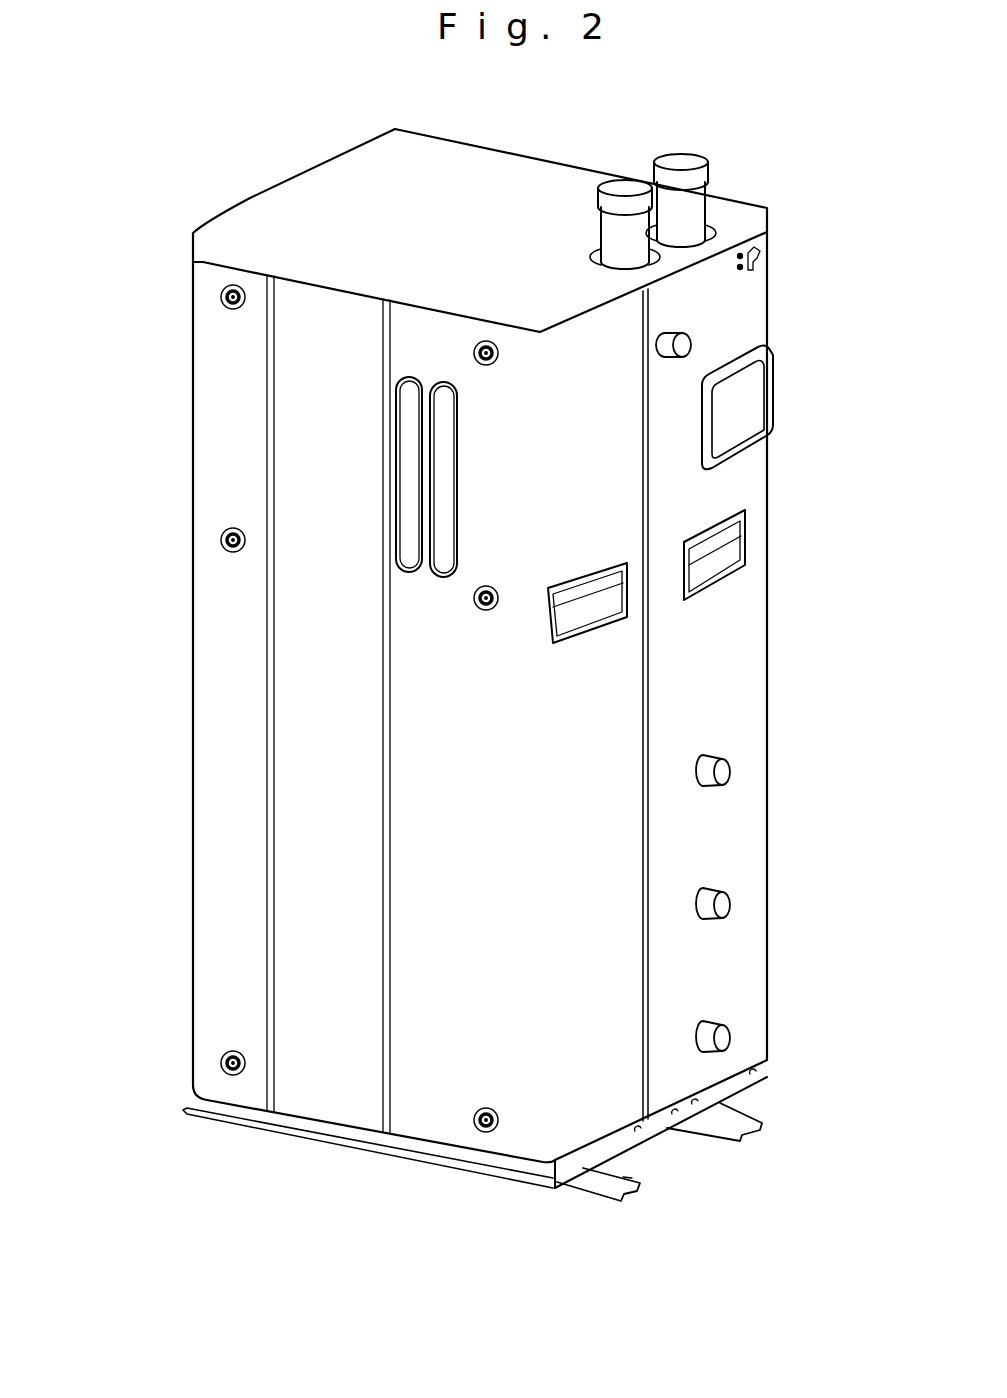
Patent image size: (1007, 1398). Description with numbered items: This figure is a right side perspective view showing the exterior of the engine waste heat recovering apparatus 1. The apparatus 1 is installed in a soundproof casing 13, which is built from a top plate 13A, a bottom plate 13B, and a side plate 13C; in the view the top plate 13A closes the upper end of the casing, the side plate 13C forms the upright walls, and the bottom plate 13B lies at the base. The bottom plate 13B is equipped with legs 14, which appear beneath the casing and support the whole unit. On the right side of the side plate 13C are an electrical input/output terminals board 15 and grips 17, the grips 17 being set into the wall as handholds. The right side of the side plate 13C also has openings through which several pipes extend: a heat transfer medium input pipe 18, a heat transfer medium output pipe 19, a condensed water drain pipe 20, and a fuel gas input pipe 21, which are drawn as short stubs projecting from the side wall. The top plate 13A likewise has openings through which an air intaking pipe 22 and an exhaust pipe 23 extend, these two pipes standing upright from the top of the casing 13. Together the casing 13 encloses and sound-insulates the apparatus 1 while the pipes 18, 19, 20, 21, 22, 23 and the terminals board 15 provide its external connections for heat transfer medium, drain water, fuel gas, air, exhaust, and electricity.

The waste heat recovering apparatus 1 is at (480, 658).
The soundproof casing 13 is at (480, 658).
The top plate 13A is at (247, 242).
The bottom plate 13B is at (313, 1123).
The side plate 13C is at (747, 638).
The legs 14 is at (692, 1118).
The electrical input/output terminals board 15 is at (750, 410).
The grips 17 is at (722, 550).
The heat transfer medium input pipe 18 is at (722, 1038).
The heat transfer medium output pipe 19 is at (722, 905).
The condensed water drain pipe 20 is at (722, 772).
The fuel gas input pipe 21 is at (682, 345).
The air intaking pipe 22 is at (620, 195).
The exhaust pipe 23 is at (697, 188).